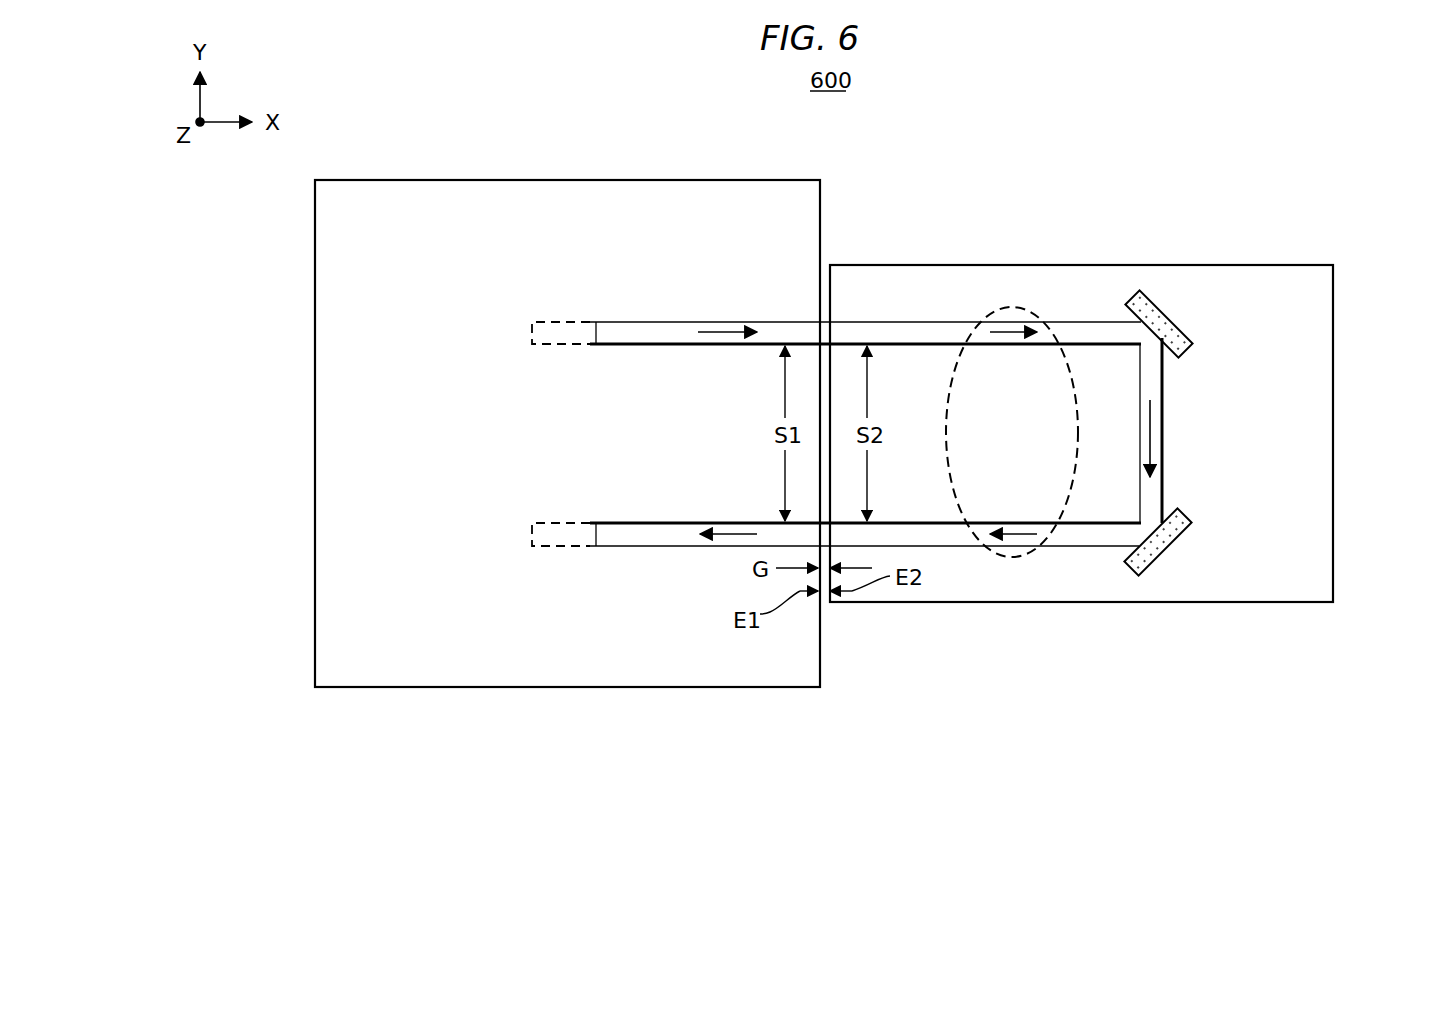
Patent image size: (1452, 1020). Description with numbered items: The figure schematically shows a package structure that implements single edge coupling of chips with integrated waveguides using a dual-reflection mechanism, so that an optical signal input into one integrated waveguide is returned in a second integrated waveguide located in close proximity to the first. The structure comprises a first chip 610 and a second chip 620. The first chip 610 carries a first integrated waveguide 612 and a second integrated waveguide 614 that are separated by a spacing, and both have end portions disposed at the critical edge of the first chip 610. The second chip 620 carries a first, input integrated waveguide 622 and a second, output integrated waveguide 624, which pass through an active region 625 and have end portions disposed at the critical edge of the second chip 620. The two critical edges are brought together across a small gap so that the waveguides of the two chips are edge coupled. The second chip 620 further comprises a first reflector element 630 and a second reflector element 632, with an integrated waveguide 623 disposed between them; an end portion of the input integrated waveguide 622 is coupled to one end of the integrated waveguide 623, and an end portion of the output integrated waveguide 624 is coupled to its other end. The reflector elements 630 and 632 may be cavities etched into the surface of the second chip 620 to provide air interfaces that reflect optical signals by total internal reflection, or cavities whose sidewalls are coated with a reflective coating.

The first chip 610 is at (675, 180).
The first integrated waveguide 612 is at (718, 320).
The second integrated waveguide 614 is at (718, 521).
The second chip 620 is at (1265, 265).
The first (input) integrated waveguide 622 is at (880, 322).
The integrated waveguide 623 is at (1165, 440).
The second (output) integrated waveguide 624 is at (925, 547).
The active region 625 is at (1032, 316).
The first reflector element 630 is at (1182, 330).
The second reflector element 632 is at (1175, 548).